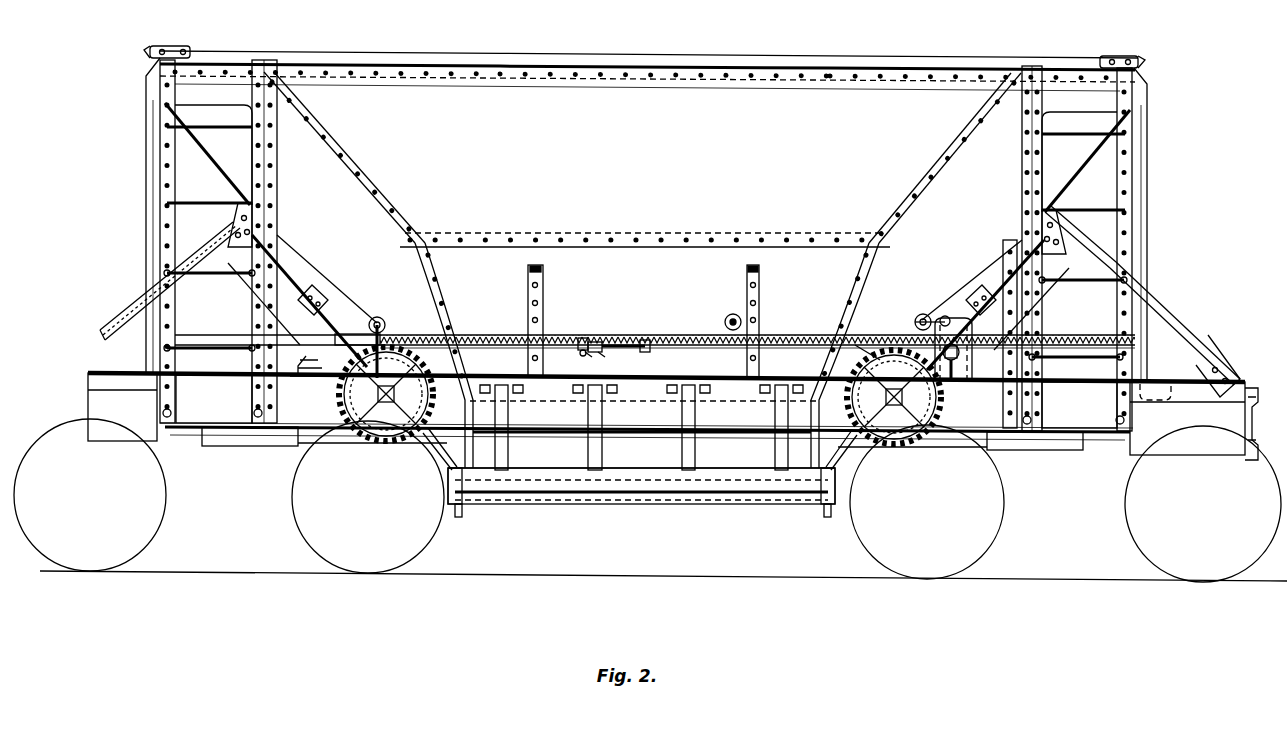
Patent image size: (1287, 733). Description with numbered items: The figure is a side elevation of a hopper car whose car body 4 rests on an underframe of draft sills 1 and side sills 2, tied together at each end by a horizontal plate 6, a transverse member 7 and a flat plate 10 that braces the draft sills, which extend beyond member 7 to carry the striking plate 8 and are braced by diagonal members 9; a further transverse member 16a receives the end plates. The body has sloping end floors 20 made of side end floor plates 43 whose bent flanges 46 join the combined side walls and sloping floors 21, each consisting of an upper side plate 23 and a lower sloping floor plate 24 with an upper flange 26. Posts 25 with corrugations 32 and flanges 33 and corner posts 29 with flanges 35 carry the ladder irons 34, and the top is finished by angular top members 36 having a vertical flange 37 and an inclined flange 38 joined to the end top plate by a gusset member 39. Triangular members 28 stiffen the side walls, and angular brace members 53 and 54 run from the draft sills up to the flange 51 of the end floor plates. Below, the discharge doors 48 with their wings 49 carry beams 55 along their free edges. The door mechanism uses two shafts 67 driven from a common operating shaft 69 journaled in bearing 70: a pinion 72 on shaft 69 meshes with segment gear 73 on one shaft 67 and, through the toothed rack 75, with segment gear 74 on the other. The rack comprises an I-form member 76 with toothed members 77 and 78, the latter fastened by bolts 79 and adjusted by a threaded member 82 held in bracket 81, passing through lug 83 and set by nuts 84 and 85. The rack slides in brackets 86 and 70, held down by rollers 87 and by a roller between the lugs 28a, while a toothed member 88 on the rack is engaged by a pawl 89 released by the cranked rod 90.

The draft sill 1 is at (647, 496).
The side sill 2 is at (646, 412).
The car body 4 is at (647, 98).
The member (horizontal plate) 6 is at (218, 372).
The transverse member 7 is at (174, 346).
The striking plate 8 is at (1245, 402).
The diagonal member 9 is at (137, 382).
The member (flat plate) 10 is at (132, 371).
The transverse member 16a is at (312, 366).
The sloping end floor 20 is at (646, 158).
The combined side wall and sloping floor 21 is at (883, 270).
The upper side plate 23 is at (395, 270).
The sloping floor plate 24 is at (645, 252).
The post 25 is at (252, 290).
The upper flange 26 is at (628, 240).
The member (triangular support) 28 is at (527, 305).
The lug 28a is at (724, 320).
The corner post 29 is at (160, 203).
The corrugation 32 is at (252, 312).
The flange 33 is at (256, 243).
The ladder iron 34 is at (212, 206).
The flange 35 is at (160, 247).
The top member 36 is at (385, 64).
The vertical flange 37 is at (620, 75).
The inclined flange 38 is at (903, 66).
The gusset member 39 is at (180, 46).
The side end floor plate 43 is at (649, 279).
The flange 46 is at (350, 170).
The discharge door 48 is at (641, 427).
The baffle plate or wing 49 is at (462, 512).
The flange 51 is at (218, 176).
The brace member 53 is at (125, 322).
The brace member 54 is at (325, 300).
The beam 55 is at (665, 492).
The shaft 67 is at (376, 394).
The operating shaft 69 is at (955, 370).
The bearing (bracket) 70 is at (965, 352).
The pinion 72 is at (866, 350).
The segment gear 73 is at (903, 447).
The segment gear 74 is at (375, 444).
The toothed rack 75 is at (473, 334).
The member (I-section) 76 is at (633, 335).
The toothed member 77 is at (1090, 359).
The toothed member 78 is at (496, 344).
The bolt 79 is at (583, 338).
The bracket 81 is at (628, 348).
The threaded member 82 is at (596, 342).
The lug 83 is at (585, 356).
The nut 84 is at (578, 352).
The nut 85 is at (600, 356).
The bracket 86 is at (380, 330).
The roller 87 is at (377, 317).
The toothed member 88 is at (1150, 300).
The pawl 89 is at (925, 316).
The rod 90 is at (946, 316).